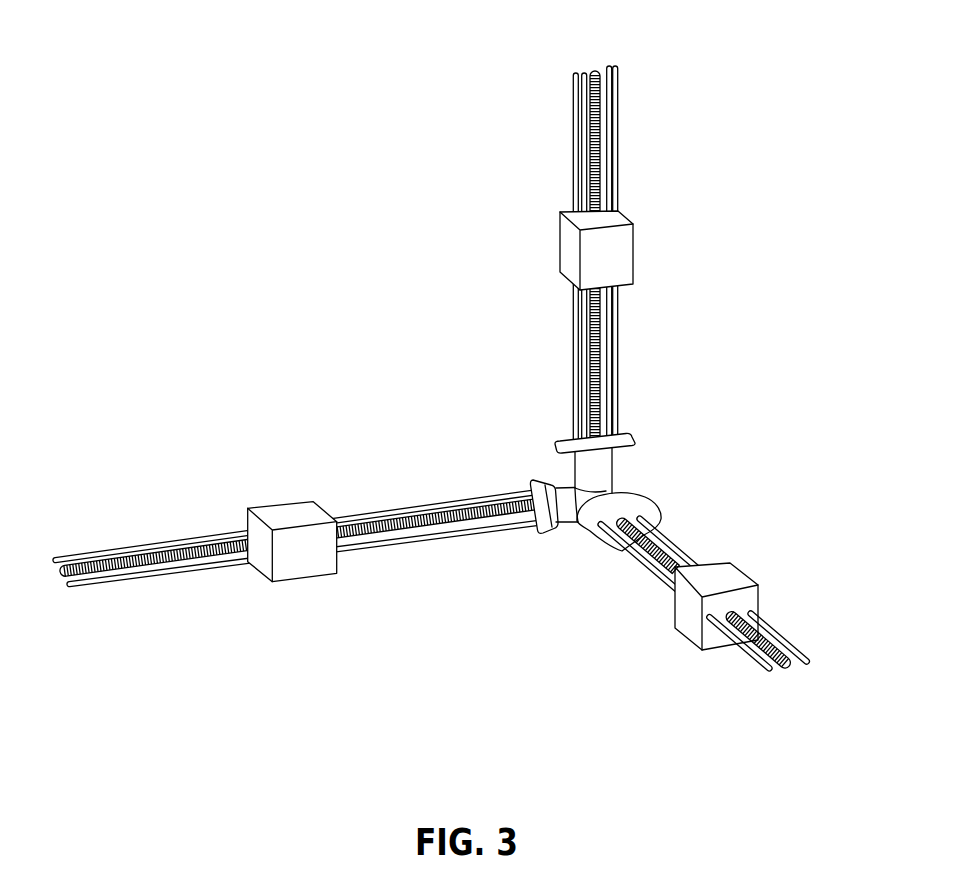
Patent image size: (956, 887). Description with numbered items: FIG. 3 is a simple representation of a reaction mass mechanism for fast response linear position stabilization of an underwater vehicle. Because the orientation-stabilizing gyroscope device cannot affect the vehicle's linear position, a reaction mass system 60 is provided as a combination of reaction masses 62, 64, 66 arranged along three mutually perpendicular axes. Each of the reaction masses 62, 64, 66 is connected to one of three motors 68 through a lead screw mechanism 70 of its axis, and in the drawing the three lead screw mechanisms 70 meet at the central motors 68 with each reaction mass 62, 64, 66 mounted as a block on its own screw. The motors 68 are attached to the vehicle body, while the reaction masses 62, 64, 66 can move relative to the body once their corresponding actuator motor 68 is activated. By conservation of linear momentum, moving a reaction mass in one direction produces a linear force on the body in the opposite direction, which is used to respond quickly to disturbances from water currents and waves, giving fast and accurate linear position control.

The reaction mass system 60 is at (215, 50).
The reaction mass 62 is at (740, 575).
The reaction mass 64 is at (283, 510).
The reaction mass 66 is at (627, 257).
The motor 68 is at (557, 474).
The lead screw mechanism 70 is at (766, 660).